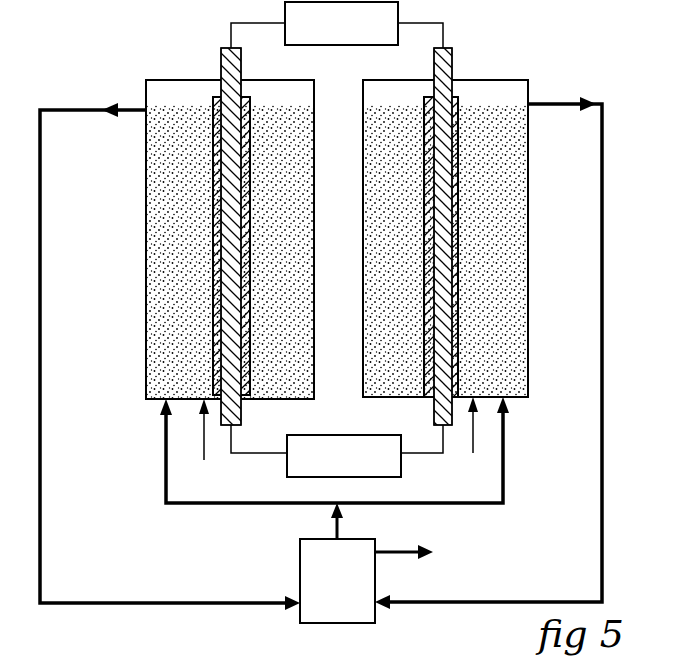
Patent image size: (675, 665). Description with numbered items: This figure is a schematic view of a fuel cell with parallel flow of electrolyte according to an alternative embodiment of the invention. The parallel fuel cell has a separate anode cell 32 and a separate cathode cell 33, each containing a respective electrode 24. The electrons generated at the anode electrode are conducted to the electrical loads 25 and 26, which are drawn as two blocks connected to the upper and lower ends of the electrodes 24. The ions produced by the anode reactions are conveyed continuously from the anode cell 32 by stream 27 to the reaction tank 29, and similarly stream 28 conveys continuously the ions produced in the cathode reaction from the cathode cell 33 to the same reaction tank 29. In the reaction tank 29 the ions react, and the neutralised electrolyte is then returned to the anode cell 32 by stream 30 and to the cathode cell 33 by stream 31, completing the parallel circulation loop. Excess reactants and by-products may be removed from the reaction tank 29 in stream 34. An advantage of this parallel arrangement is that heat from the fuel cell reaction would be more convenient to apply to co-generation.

The electrode 24 is at (442, 70).
The electrical load 25 is at (330, 32).
The electrical load 26 is at (333, 466).
The stream 27 is at (43, 298).
The stream 28 is at (600, 288).
The reaction tank 29 is at (326, 585).
The stream 30 is at (166, 463).
The stream 31 is at (503, 465).
The anode cell 32 is at (173, 238).
The cathode cell 33 is at (507, 243).
The stream 34 is at (402, 555).